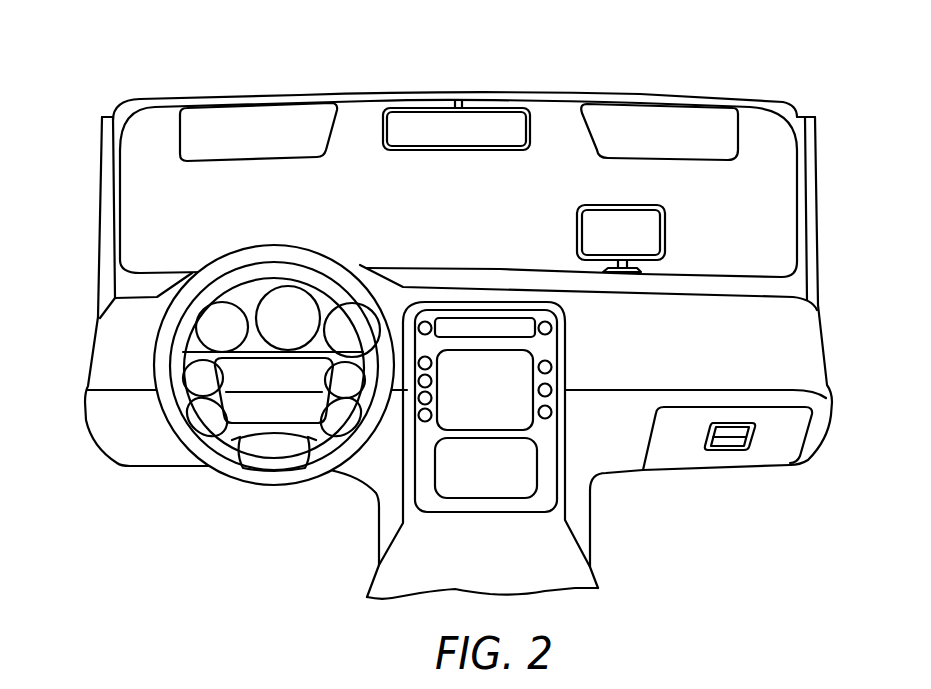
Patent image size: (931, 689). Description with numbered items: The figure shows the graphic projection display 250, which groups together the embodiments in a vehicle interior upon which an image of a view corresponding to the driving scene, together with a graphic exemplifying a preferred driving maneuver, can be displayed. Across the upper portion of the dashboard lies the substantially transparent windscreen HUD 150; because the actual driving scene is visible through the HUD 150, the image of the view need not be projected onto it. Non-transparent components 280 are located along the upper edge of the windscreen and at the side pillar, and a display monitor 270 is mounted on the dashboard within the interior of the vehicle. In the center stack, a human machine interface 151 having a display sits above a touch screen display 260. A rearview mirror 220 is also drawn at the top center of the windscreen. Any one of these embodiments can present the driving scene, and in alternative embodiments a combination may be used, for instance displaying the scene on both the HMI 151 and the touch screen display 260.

The graphic projection display 250 is at (160, 97).
The substantially transparent windscreen HUD 150 is at (168, 161).
The non-transparent components 280 is at (278, 140).
The rearview mirror 220 is at (476, 140).
The display monitor 270 is at (666, 218).
The human machine interface (HMI) 151 is at (533, 362).
The touch screen display 260 is at (537, 450).